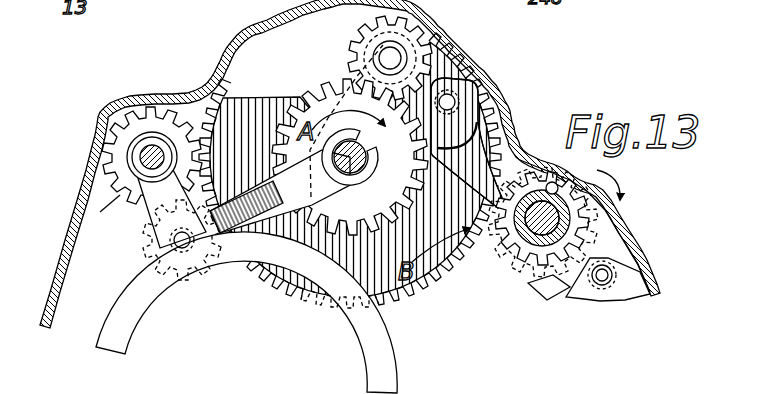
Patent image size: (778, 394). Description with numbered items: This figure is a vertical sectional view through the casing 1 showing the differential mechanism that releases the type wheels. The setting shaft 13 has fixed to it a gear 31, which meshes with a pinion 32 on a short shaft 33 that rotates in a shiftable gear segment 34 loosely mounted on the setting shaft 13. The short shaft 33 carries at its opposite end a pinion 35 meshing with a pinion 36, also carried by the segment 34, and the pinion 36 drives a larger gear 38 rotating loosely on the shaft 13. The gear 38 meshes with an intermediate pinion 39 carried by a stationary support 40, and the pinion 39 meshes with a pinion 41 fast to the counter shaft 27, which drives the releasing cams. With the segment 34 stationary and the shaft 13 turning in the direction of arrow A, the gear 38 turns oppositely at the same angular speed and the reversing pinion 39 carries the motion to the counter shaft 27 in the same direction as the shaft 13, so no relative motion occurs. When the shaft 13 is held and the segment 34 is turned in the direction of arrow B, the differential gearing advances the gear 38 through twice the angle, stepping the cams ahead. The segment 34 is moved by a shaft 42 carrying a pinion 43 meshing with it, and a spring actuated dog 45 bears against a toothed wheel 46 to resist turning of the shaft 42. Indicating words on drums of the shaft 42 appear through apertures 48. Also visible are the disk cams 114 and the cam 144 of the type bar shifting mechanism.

The casing 1 is at (642, 278).
The setting shaft 13 is at (368, 157).
The counter shaft 27 is at (127, 177).
The gear 31 is at (350, 157).
The pinion 32 is at (432, 22).
The short shaft 33 is at (386, 56).
The shiftable gear segment 34 is at (488, 208).
The pinion 35 is at (458, 46).
The pinion 36 is at (491, 110).
The larger gear 38 is at (350, 169).
The intermediate pinion 39 is at (152, 237).
The stationary support 40 is at (280, 191).
The pinion 41 is at (146, 208).
The shaft 42 is at (553, 220).
The pinion 43 is at (578, 171).
The spring actuated dog 45 is at (550, 283).
The toothed wheel 46 is at (526, 172).
The apertures 48 is at (588, 188).
The disk cams 114 is at (375, 339).
The cam 144 is at (345, 339).